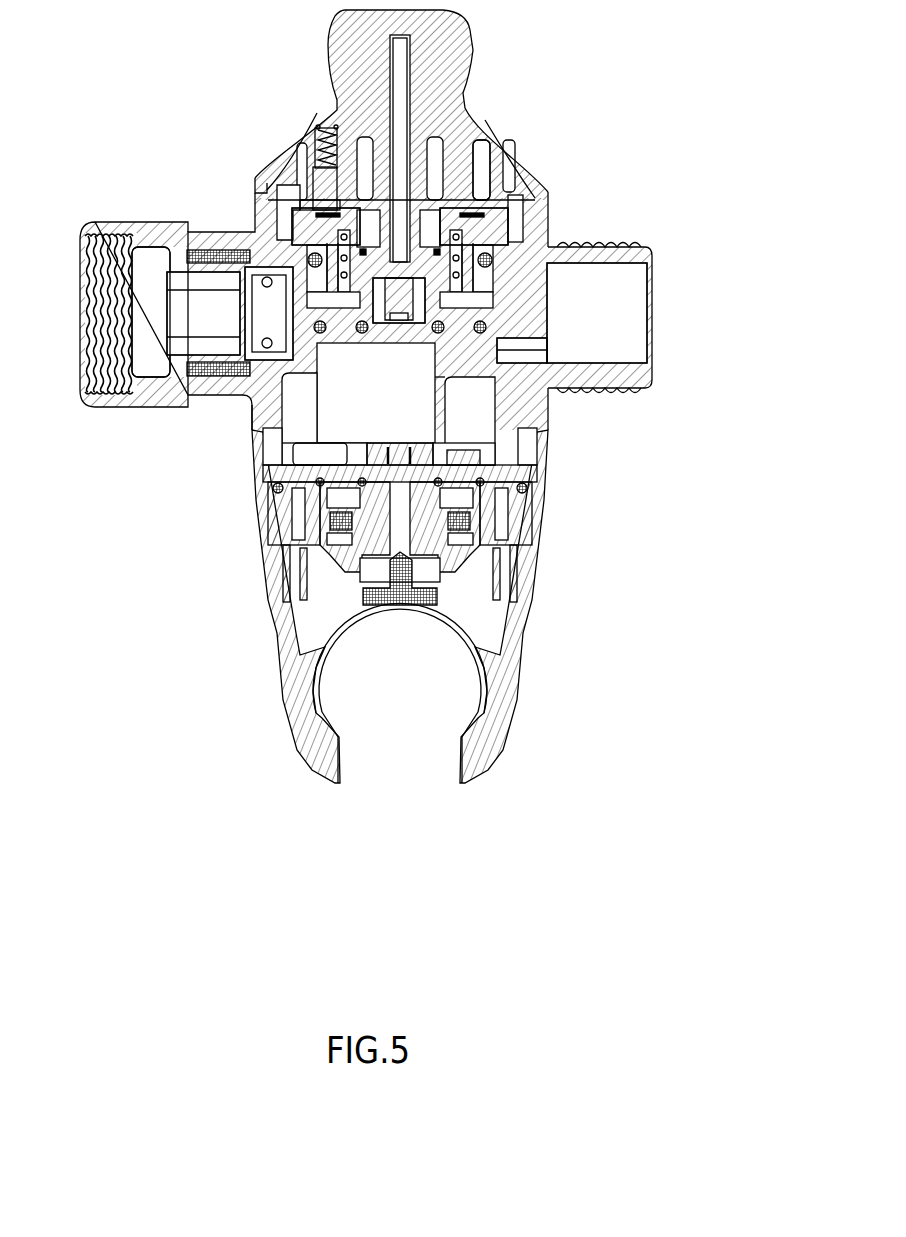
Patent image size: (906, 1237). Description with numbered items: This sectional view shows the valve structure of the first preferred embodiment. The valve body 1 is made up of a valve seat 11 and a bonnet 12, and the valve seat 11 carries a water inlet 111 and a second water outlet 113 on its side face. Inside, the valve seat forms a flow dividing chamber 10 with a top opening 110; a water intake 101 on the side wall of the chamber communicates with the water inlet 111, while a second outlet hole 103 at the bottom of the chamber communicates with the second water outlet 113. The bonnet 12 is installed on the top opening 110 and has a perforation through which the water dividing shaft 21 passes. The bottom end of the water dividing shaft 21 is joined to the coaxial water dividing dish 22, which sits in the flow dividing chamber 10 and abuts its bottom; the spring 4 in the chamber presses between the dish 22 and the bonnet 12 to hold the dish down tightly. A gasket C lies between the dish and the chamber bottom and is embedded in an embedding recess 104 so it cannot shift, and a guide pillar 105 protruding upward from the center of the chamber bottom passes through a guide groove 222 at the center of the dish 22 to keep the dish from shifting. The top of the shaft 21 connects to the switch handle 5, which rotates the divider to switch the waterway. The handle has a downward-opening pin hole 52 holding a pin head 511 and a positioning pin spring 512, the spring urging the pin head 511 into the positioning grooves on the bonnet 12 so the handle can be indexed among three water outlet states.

The valve body 1 is at (620, 148).
The spring 4 is at (253, 163).
The switch handle 5 is at (448, 66).
The flow dividing chamber 10 is at (303, 297).
The valve seat 11 is at (537, 245).
The bonnet 12 is at (497, 212).
The water dividing shaft 21 is at (457, 205).
The water dividing dish 22 is at (500, 325).
The pin hole 52 is at (321, 172).
The water intake 101 is at (262, 292).
The second outlet hole 103 is at (437, 352).
The embedding recess 104 is at (485, 335).
The guide pillar 105 is at (355, 333).
The top opening 110 is at (515, 262).
The water inlet 111 is at (227, 303).
The second water outlet 113 is at (597, 303).
The guide groove 222 is at (535, 262).
The pin head 511 is at (305, 183).
The positioning pin spring 512 is at (317, 127).
The gasket C is at (217, 396).